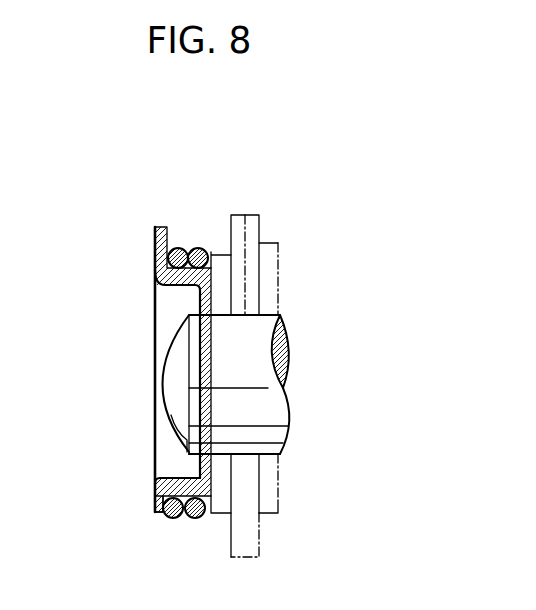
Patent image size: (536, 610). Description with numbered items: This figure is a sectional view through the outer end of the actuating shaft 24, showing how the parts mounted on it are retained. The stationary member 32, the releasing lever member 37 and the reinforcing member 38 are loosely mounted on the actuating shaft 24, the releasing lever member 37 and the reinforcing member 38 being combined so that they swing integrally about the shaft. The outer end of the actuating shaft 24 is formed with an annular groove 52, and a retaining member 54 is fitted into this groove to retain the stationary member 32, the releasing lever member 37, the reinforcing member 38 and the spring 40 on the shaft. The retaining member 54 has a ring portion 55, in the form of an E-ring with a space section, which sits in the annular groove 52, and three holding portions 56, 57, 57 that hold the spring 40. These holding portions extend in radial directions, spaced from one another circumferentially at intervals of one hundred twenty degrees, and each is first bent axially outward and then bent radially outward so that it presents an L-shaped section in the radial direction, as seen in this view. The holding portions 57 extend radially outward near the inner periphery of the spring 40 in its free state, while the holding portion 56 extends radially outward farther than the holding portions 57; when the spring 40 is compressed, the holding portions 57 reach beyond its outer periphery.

The actuating shaft 24 is at (250, 412).
The stationary member 32 is at (245, 215).
The releasing lever member 37 is at (275, 243).
The reinforcing member 38 is at (216, 252).
The spring 40 is at (180, 519).
The annular groove 52 is at (198, 368).
The retaining member 54 is at (152, 212).
The ring portion 55 is at (186, 470).
The holding portion 56 is at (166, 255).
The holding portion 57 is at (156, 508).